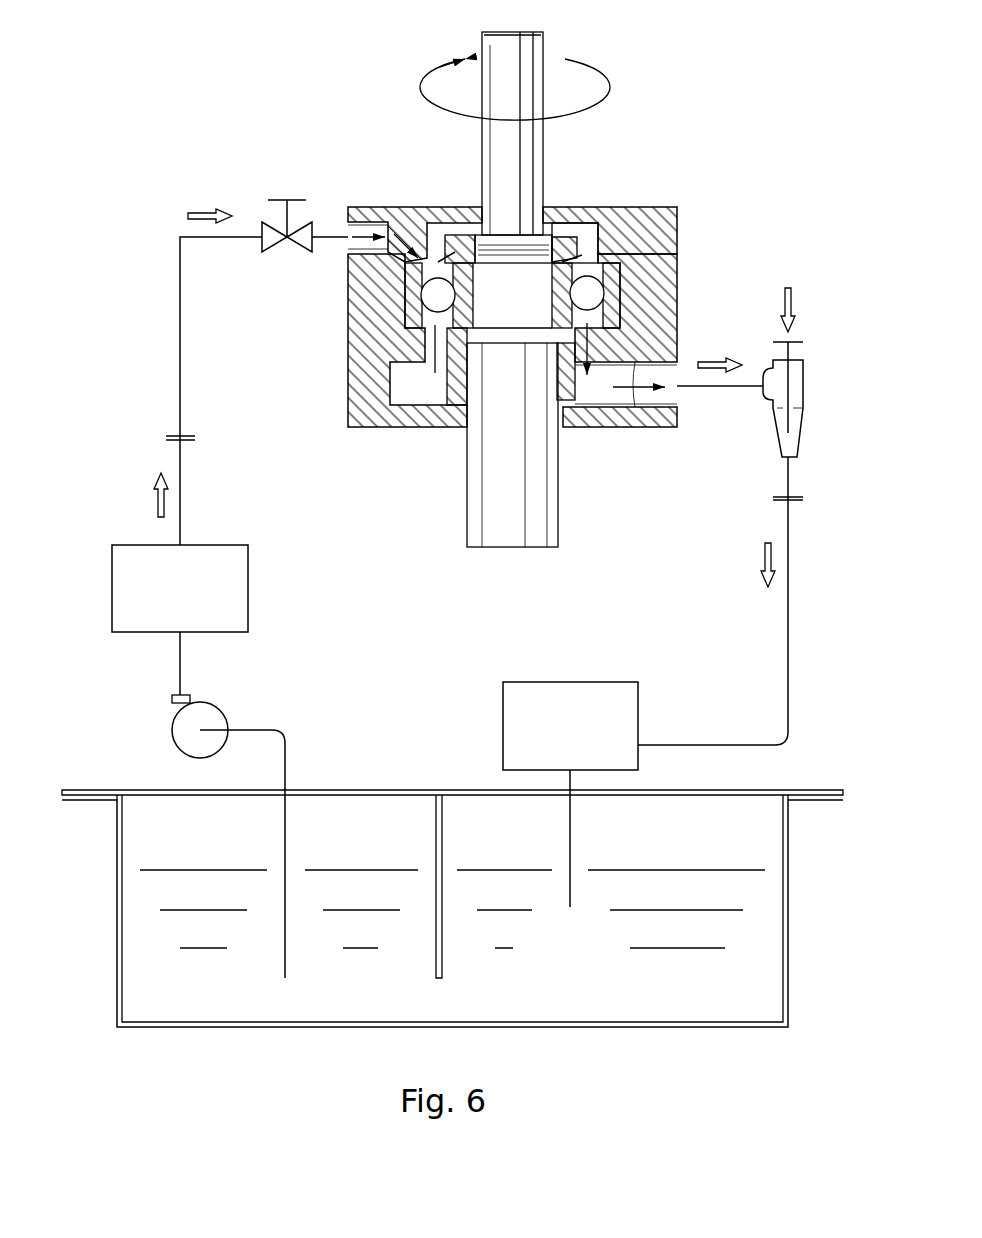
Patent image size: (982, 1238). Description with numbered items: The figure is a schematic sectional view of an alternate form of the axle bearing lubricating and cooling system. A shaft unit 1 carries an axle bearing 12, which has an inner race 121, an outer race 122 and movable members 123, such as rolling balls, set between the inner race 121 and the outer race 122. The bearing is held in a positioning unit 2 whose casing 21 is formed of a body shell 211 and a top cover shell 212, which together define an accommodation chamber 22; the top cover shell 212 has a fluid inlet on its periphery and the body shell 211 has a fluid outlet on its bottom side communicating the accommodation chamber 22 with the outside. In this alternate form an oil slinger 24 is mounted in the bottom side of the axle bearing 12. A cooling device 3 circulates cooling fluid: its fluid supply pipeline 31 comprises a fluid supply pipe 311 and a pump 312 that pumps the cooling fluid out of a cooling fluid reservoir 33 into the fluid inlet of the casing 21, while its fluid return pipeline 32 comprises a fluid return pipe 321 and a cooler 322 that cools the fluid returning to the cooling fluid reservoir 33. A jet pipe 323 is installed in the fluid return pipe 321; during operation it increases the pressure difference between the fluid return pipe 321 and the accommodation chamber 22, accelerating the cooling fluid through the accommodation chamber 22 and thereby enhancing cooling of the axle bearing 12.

The shaft unit 1 is at (475, 150).
The positioning unit 2 is at (577, 157).
The casing 21 is at (682, 277).
The body shell 211 is at (348, 375).
The top cover shell 212 is at (428, 209).
The accommodation chamber 22 is at (582, 230).
The axle bearing 12 is at (397, 313).
The inner race 121 is at (467, 313).
The outer race 122 is at (412, 290).
The movable members 123 is at (445, 293).
The oil slinger 24 is at (450, 392).
The cooling device 3 is at (800, 507).
The fluid supply pipeline 31 is at (160, 383).
The fluid supply pipe 311 is at (182, 477).
The pump 312 is at (200, 707).
The fluid return pipeline 32 is at (792, 607).
The fluid return pipe 321 is at (787, 480).
The cooler 322 is at (508, 702).
The jet pipe 323 is at (800, 382).
The cooling fluid reservoir 33 is at (785, 858).